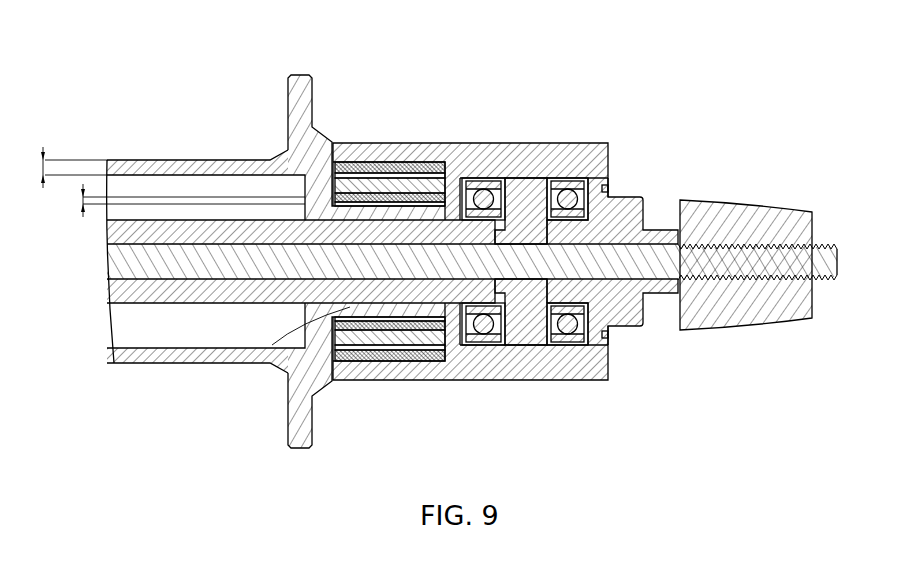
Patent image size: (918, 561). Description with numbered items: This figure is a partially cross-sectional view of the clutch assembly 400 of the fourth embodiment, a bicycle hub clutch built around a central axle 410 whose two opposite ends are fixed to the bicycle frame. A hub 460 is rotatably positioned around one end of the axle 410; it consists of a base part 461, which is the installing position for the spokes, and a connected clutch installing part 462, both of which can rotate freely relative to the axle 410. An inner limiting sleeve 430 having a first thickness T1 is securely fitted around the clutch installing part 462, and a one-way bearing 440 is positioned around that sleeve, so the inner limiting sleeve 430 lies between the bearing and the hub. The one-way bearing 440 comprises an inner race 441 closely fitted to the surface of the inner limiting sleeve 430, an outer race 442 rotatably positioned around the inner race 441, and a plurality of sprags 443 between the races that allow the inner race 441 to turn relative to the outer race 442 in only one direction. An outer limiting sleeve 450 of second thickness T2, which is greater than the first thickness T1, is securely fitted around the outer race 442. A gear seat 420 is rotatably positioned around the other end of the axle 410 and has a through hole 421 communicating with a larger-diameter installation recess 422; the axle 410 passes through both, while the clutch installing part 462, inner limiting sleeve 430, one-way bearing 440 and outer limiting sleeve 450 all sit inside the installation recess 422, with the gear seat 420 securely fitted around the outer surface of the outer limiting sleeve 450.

The clutch assembly 400 is at (125, 59).
The axle 410 is at (646, 188).
The gear seat 420 is at (518, 136).
The through hole 421 is at (543, 170).
The installation recess 422 is at (493, 350).
The inner limiting sleeve 430 is at (414, 175).
The one-way bearing 440 is at (447, 426).
The inner race 441 is at (372, 365).
The outer race 442 is at (420, 340).
The sprags 443 is at (392, 350).
The outer limiting sleeve 450 is at (376, 165).
The hub 460 is at (263, 405).
The base part 461 is at (185, 355).
The clutch installing part 462 is at (270, 350).
The first thickness T1 is at (72, 200).
The second thickness T2 is at (62, 167).